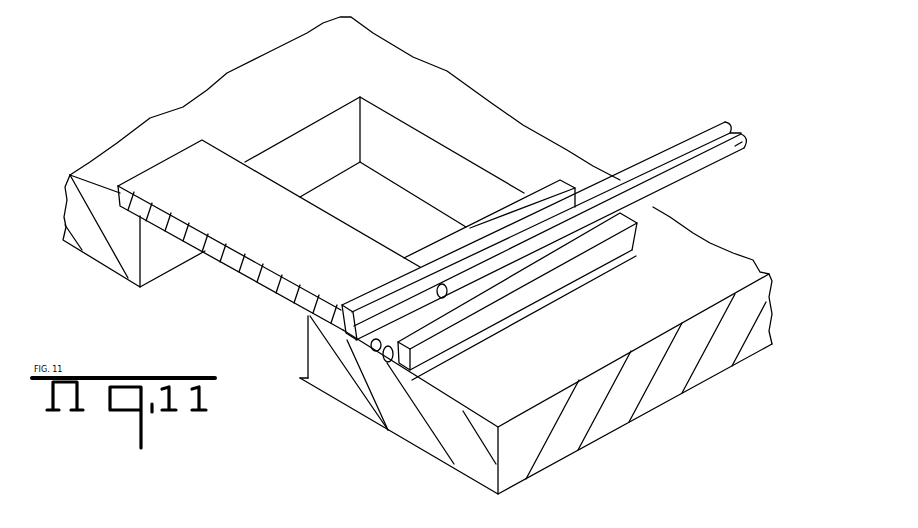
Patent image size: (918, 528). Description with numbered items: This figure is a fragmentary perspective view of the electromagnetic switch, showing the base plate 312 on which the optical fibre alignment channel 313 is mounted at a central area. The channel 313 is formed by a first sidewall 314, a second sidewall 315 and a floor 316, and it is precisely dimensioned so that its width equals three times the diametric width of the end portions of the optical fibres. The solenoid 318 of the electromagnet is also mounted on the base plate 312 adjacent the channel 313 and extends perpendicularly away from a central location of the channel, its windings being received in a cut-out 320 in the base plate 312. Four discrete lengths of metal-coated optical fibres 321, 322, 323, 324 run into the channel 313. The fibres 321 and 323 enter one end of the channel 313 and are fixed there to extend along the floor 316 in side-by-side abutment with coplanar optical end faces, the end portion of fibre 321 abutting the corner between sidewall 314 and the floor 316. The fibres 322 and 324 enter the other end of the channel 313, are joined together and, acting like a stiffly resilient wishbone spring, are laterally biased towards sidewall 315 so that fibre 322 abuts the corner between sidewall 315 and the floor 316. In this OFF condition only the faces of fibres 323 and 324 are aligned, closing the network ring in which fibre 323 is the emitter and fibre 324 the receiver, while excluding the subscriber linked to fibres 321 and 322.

The base plate 312 is at (641, 397).
The optical fibre alignment channel 313 is at (532, 293).
The first sidewall 314 is at (342, 328).
The second sidewall 315 is at (469, 333).
The floor 316 is at (342, 332).
The solenoid 318 is at (287, 237).
The cut-out 320 is at (439, 160).
The coated optical fibre 321 is at (667, 158).
The coated optical fibre 322 is at (390, 362).
The coated optical fibre 323 is at (698, 172).
The coated optical fibre 324 is at (390, 343).